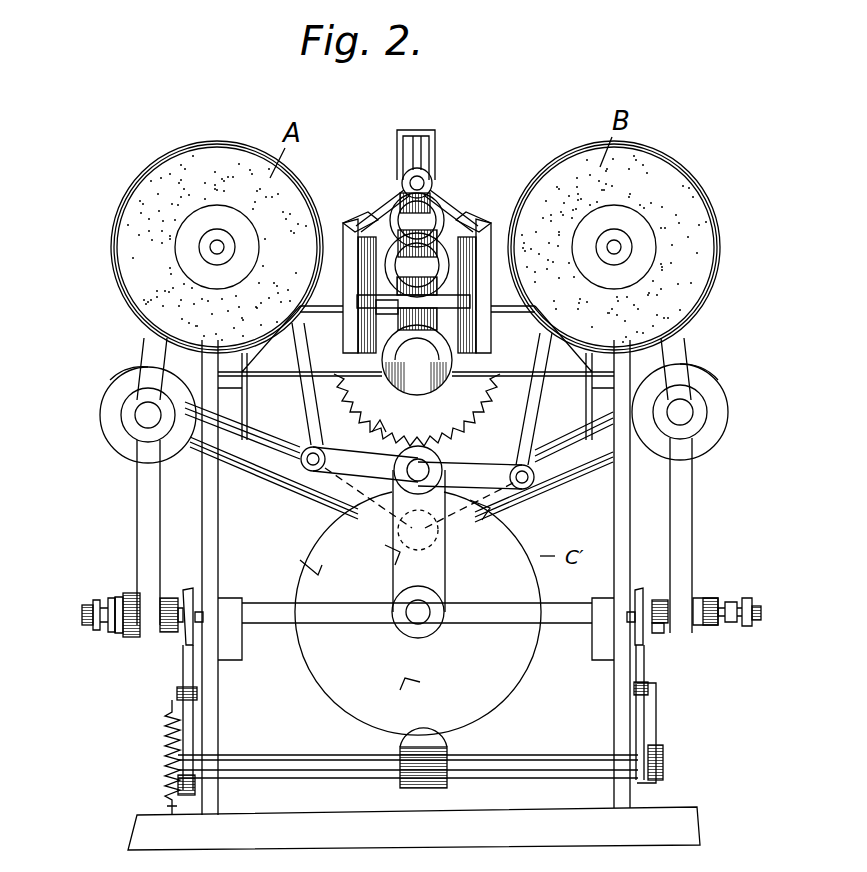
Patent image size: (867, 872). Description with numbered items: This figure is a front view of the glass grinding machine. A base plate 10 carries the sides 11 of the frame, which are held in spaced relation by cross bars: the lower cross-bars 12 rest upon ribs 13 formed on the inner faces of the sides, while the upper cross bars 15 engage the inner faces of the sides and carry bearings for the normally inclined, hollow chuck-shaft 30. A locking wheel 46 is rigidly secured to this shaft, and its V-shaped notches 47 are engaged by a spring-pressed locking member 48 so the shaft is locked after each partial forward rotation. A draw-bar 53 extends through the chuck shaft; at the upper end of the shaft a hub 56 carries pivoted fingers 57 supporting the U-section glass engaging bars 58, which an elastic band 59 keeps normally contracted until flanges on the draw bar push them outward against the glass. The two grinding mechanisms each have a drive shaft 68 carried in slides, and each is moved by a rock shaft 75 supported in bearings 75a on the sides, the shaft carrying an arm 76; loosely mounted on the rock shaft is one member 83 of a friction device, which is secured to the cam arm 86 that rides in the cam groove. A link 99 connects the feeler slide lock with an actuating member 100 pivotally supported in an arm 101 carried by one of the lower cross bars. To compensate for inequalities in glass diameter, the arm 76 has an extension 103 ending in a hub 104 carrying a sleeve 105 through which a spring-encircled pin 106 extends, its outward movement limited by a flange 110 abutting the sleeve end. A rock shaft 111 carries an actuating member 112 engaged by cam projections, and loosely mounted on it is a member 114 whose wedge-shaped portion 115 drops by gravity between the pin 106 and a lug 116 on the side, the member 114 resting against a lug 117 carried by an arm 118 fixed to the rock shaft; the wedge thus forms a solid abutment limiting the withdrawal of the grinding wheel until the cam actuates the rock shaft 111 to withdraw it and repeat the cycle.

The base plate 10 is at (414, 828).
The sides of the frame 11 is at (212, 516).
The lower cross-bars 12 is at (328, 612).
The ribs 13 is at (238, 655).
The upper cross bars 15 is at (416, 373).
The chuck-shaft 30 is at (432, 220).
The locking wheel 46 is at (417, 410).
The V-shaped notches 47 is at (387, 414).
The locking member 48 is at (343, 246).
The draw-bar 53 is at (427, 182).
The hub 56 is at (395, 200).
The pivoted fingers 57 is at (343, 268).
The glass engaging bars 58 is at (420, 130).
The elastic band 59 is at (376, 308).
The drive shaft 68 is at (210, 252).
The rock shaft 75 is at (135, 418).
The bearings 75a is at (748, 398).
The arm 76 is at (140, 344).
The friction device member 83 is at (110, 435).
The arm 86 is at (300, 488).
The link 99 is at (305, 378).
The actuating member 100 is at (470, 475).
The arm 101 is at (432, 556).
The extension 103 is at (135, 520).
The hub 104 is at (125, 597).
The sleeve 105 is at (118, 632).
The pin 106 is at (85, 627).
The flange 110 is at (172, 632).
The rock shaft 111 is at (270, 775).
The actuating member 112 is at (400, 760).
The member 114 is at (183, 672).
The wedge-shaped portion 115 is at (185, 595).
The pin or lug 116 is at (200, 612).
The pin or lug 117 is at (177, 693).
The arm 118 is at (170, 735).